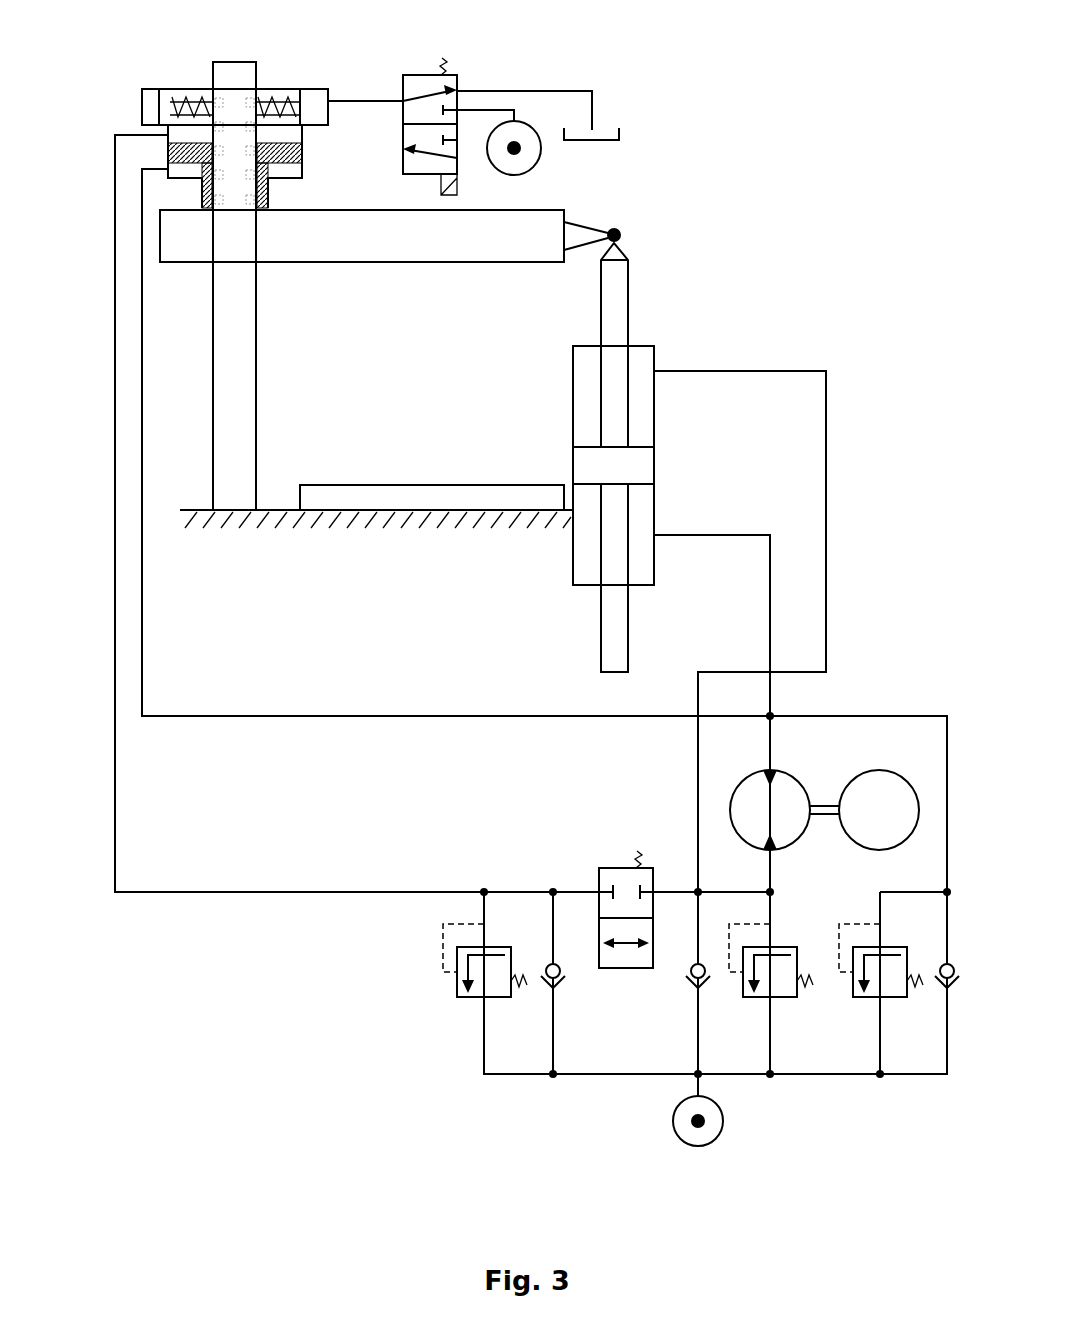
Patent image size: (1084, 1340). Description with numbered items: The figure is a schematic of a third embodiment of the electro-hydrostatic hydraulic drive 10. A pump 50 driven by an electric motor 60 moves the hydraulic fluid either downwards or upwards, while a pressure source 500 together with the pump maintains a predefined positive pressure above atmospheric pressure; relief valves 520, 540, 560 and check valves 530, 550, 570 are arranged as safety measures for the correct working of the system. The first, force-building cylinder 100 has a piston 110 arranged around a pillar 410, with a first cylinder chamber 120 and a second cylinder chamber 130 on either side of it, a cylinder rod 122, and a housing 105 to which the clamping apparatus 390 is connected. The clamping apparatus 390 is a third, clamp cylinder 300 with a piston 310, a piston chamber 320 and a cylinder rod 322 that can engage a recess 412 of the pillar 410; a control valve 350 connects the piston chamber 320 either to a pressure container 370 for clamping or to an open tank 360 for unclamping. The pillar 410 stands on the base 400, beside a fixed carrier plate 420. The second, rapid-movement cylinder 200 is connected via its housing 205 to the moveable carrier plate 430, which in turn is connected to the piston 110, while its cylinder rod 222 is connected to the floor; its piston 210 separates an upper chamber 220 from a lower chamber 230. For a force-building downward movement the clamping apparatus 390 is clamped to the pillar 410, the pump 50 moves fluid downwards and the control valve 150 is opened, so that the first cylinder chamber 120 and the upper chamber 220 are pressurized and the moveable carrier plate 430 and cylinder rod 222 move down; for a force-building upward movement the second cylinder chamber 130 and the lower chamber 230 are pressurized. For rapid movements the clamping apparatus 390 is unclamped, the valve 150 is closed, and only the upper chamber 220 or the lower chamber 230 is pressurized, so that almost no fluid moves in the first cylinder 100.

The hydraulic drive 10 is at (750, 95).
The pump 50 is at (800, 782).
The electric motor 60 is at (882, 772).
The first cylinder 100 is at (315, 157).
The housing of the first cylinder 105 is at (303, 155).
The piston, first cylinder 110 is at (185, 152).
The first cylinder chamber, first cylinder 120 is at (185, 135).
The cylinder rod, first cylinder 122 is at (205, 197).
The second cylinder chamber, first cylinder 130 is at (180, 172).
The 2-port/2-way control valve 150 is at (601, 862).
The second cylinder 200 is at (655, 338).
The housing of the second cylinder 205 is at (573, 362).
The piston, second cylinder 210 is at (640, 470).
The first cylinder chamber, second cylinder 220 is at (640, 423).
The cylinder rod, second cylinder 222 is at (612, 325).
The second cylinder chamber, second cylinder 230 is at (640, 515).
The third cylinder 300 is at (335, 93).
The piston, third cylinder 310 is at (305, 110).
The piston chamber, third cylinder 320 is at (303, 107).
The cylinder rod, third cylinder 322 is at (282, 100).
The 3-port/2-way control valve 350 is at (415, 65).
The open tank 360 is at (607, 112).
The pressure container 370 is at (545, 162).
The clamping apparatus 390 is at (250, 92).
The base 400 is at (376, 508).
The pillar 410 is at (238, 425).
The recess 412 is at (215, 103).
The fixed carrier plate 420 is at (383, 497).
The moveable carrier plate 430 is at (390, 236).
The pressure source 500 is at (738, 1133).
The relief valve 520 is at (472, 1005).
The check valve 530 is at (563, 992).
The relief valve 540 is at (755, 1003).
The check valve 550 is at (688, 992).
The relief valve 560 is at (868, 1003).
The check valve 570 is at (940, 992).